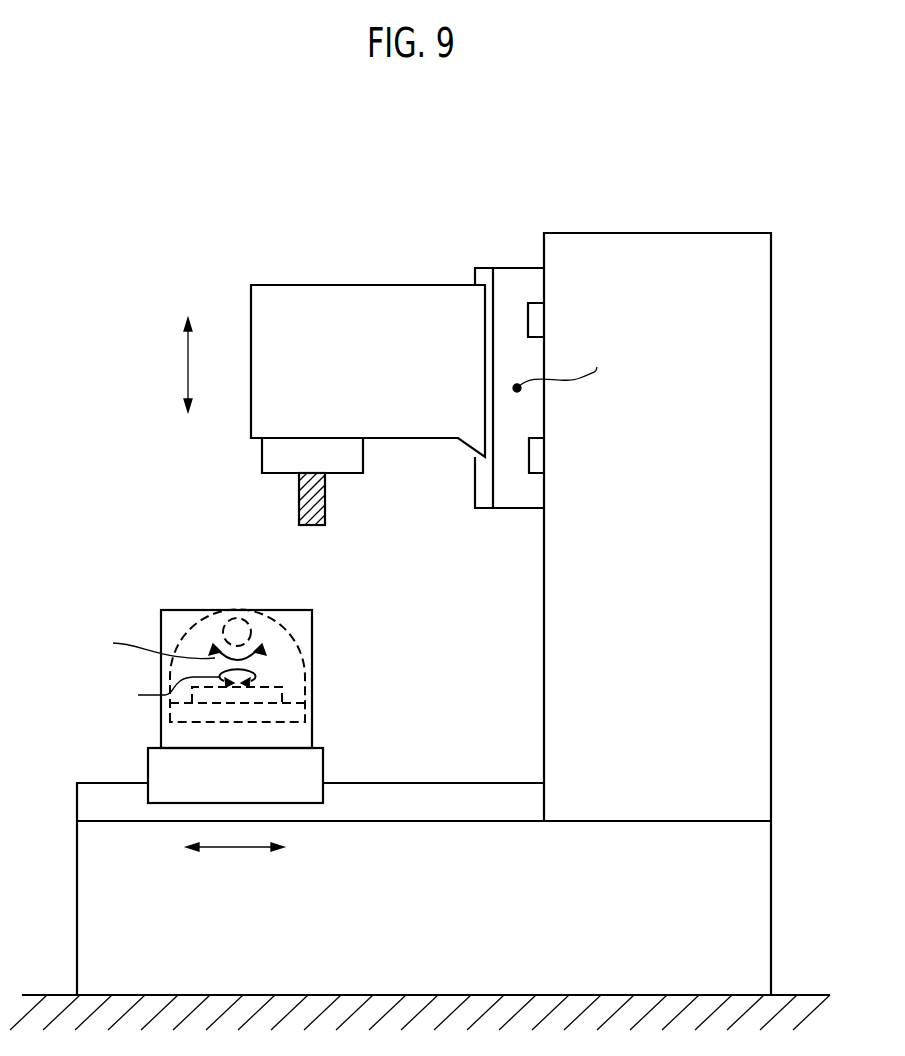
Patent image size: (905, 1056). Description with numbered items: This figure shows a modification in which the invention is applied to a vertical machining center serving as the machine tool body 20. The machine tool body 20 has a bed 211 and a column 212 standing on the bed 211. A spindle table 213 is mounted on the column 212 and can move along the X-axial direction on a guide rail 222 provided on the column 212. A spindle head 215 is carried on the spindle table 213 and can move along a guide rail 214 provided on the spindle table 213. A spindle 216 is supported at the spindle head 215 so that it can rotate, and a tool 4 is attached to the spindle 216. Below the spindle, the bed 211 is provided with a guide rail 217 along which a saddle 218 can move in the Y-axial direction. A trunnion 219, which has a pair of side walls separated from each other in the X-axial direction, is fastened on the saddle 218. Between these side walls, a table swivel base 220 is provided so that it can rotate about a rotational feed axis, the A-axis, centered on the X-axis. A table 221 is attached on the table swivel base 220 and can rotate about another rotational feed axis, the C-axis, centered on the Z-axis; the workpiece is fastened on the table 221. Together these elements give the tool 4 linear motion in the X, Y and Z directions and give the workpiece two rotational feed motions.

The machine tool body 20 is at (598, 172).
The bed 211 is at (740, 900).
The column 212 is at (742, 372).
The spindle table 213 is at (507, 275).
The guide rail 214 is at (482, 492).
The spindle head 215 is at (333, 298).
The spindle 216 is at (270, 455).
The tool 4 is at (307, 502).
The guide rail 217 is at (390, 797).
The saddle 218 is at (155, 763).
The trunnion 219 is at (187, 608).
The table swivel base 220 is at (295, 718).
The table 221 is at (265, 688).
The guide rail 222 is at (534, 310).